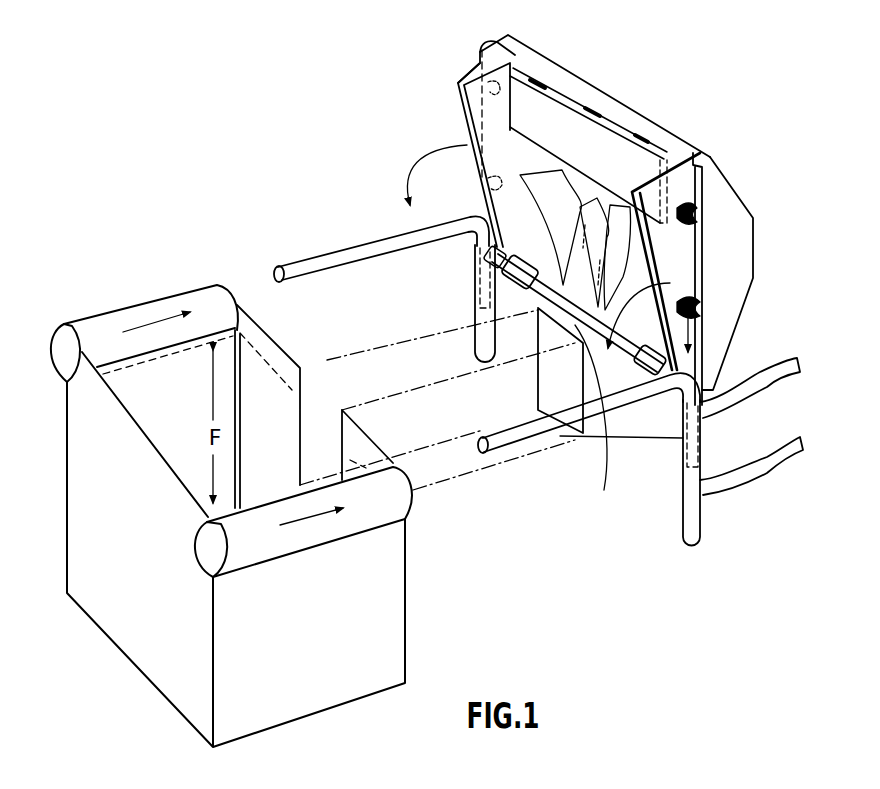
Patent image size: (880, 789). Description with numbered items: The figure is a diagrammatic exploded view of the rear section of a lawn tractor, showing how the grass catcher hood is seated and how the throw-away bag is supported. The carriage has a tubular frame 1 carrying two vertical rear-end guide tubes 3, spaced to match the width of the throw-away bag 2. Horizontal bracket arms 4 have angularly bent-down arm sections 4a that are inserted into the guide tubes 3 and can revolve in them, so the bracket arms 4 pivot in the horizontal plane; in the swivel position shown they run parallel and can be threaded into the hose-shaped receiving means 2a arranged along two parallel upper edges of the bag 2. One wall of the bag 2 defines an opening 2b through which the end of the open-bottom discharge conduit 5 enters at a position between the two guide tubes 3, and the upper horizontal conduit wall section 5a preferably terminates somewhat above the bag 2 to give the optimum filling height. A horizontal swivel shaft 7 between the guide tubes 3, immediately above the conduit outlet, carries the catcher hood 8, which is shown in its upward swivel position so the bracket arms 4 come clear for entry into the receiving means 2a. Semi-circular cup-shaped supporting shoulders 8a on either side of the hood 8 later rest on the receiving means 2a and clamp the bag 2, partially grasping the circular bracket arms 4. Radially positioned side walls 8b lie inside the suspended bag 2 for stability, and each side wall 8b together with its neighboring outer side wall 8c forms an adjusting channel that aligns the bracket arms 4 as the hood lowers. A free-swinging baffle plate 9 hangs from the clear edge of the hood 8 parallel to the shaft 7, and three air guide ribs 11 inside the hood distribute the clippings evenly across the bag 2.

The tubular frame 1 is at (780, 384).
The throw-away bag 2 is at (324, 678).
The hose-shaped receiving means 2a is at (219, 290).
The opening 2b is at (305, 418).
The guide tubes 3 is at (475, 318).
The horizontal bracket arms 4 is at (350, 243).
The arm sections 4a is at (472, 272).
The discharge conduit 5 is at (540, 380).
The upper horizontal conduit wall section 5a is at (597, 420).
The horizontal swivel shaft 7 is at (540, 290).
The catcher hood 8 is at (723, 135).
The supporting shoulders 8a is at (478, 90).
The side walls 8b is at (487, 45).
The outer side wall 8c is at (480, 60).
The baffle plate 9 is at (600, 147).
The air guide ribs 11 is at (550, 183).